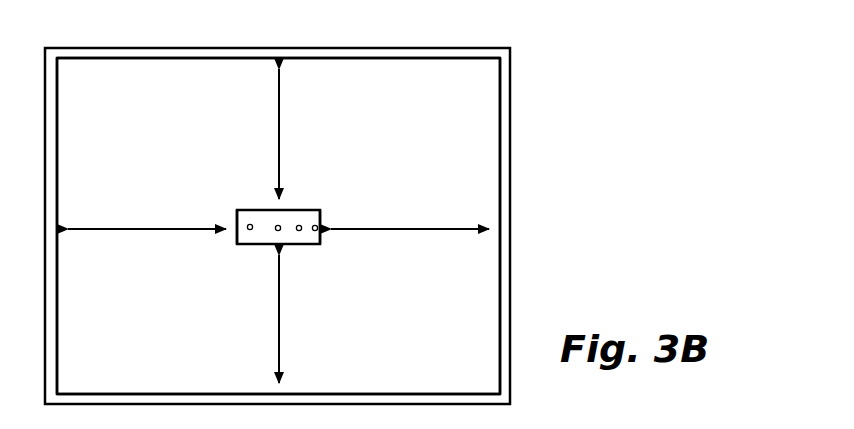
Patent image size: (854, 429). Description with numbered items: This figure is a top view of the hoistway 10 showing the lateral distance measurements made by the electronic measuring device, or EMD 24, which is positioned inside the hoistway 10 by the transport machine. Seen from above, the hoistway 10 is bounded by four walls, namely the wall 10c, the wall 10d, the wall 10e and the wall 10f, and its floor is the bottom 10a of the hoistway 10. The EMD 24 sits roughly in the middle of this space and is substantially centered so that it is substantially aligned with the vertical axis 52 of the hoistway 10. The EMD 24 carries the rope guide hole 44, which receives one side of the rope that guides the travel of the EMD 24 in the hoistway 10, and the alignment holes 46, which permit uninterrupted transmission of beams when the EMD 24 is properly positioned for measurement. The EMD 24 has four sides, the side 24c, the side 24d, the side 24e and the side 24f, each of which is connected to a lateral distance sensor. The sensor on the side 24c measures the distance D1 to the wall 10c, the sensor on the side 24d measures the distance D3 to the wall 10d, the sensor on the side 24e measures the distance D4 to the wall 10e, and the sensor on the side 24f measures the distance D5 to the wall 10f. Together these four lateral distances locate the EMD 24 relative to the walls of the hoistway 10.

The hoistway 10 is at (550, 148).
The bottom of the hoistway 10a is at (433, 345).
The wall of the hoistway 10c is at (500, 112).
The wall of the hoistway 10d is at (57, 313).
The wall of the hoistway 10e is at (187, 394).
The wall of the hoistway 10f is at (167, 58).
The EMD 24 is at (244, 262).
The side of the EMD 24c is at (320, 210).
The side of the EMD 24d is at (237, 212).
The side of the EMD 24e is at (315, 231).
The side of the EMD 24f is at (299, 225).
The rope guide hole 44 is at (299, 231).
The alignment holes 46 is at (250, 224).
The vertical axis of the hoistway 52 is at (277, 230).
The distance D1 is at (400, 231).
The distance D3 is at (162, 231).
The distance D4 is at (280, 345).
The distance D5 is at (278, 137).